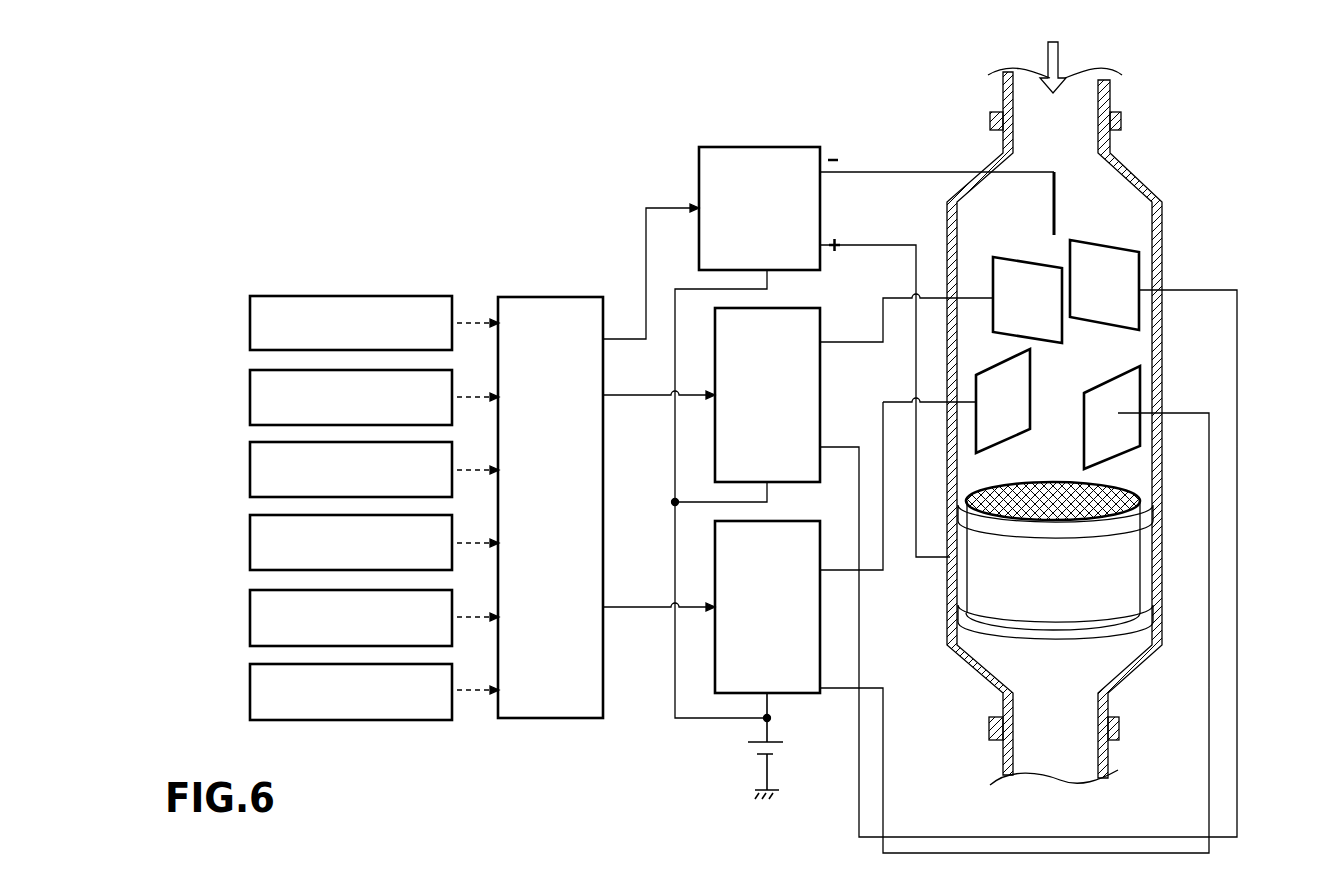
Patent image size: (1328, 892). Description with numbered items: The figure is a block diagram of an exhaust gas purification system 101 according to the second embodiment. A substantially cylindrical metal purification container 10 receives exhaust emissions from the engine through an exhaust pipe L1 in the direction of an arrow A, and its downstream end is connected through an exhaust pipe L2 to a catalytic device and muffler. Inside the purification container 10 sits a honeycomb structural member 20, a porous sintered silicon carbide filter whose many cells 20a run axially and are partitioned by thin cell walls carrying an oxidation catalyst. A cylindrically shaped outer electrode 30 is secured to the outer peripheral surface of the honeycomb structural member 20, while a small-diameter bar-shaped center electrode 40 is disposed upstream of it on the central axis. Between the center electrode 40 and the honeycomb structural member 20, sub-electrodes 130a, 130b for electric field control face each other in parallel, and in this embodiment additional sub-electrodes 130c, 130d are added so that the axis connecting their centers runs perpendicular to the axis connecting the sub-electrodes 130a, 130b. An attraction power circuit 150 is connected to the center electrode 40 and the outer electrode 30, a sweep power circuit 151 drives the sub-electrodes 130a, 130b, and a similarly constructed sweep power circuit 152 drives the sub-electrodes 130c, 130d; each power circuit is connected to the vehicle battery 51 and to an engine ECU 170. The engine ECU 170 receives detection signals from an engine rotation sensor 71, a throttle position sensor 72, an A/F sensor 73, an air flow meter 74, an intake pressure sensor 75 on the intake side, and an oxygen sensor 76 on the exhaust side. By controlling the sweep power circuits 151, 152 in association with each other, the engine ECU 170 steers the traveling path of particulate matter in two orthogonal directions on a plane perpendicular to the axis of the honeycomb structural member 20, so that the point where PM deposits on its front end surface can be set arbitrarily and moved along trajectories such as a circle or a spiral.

The engine rotation sensor 71 is at (250, 320).
The throttle position sensor 72 is at (250, 394).
The A/F sensor 73 is at (250, 466).
The air flow meter 74 is at (250, 541).
The intake pressure sensor 75 is at (250, 614).
The oxygen sensor 76 is at (250, 689).
The engine ECU 170 is at (554, 297).
The attraction power circuit 150 is at (782, 147).
The sweep power circuit 151 is at (775, 521).
The sweep power circuit 152 is at (790, 308).
The vehicle battery 51 is at (740, 748).
The exhaust gas purification system 101 is at (884, 104).
The purification container 10 is at (1143, 182).
The center electrode 40 is at (1060, 203).
The sub-electrode 130a is at (1030, 382).
The sub-electrode 130b is at (1113, 374).
The sub-electrode 130c is at (1012, 257).
The sub-electrode 130d is at (1115, 245).
The outer electrode 30 is at (1130, 598).
The cells 20a is at (1137, 480).
The honeycomb structural member 20 is at (1105, 632).
The arrow A is at (1063, 63).
The exhaust pipe L1 is at (1110, 90).
The exhaust pipe L2 is at (1104, 757).